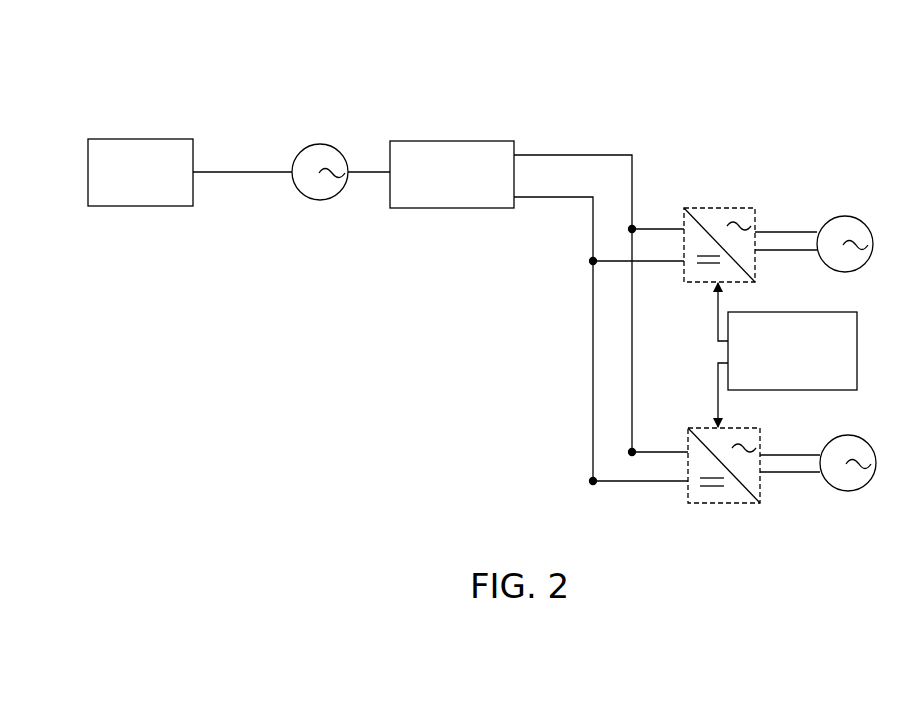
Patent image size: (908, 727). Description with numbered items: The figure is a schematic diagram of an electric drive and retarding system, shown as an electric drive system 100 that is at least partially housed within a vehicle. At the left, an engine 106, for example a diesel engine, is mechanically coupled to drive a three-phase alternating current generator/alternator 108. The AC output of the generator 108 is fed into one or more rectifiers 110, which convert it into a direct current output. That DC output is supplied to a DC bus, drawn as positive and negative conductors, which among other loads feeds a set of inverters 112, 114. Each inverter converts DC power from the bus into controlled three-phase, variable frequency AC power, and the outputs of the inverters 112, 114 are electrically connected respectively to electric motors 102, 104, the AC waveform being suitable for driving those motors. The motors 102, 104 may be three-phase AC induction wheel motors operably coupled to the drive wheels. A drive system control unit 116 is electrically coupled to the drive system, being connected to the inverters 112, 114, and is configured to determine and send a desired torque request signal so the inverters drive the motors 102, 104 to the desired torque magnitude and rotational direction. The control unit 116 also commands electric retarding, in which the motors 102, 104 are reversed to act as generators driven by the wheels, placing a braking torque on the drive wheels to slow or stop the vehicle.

The electric drive system 100 is at (667, 58).
The electric motor 102 is at (843, 216).
The electric motor 104 is at (845, 491).
The engine 106 is at (142, 139).
The three-phase alternating current generator/alternator 108 is at (319, 145).
The rectifiers 110 is at (450, 141).
The inverter 112 is at (722, 208).
The inverter 114 is at (722, 505).
The drive system control unit 116 is at (858, 351).